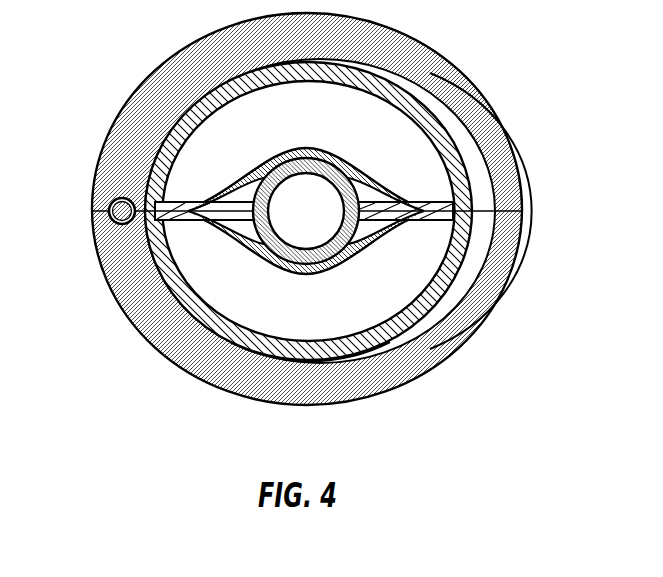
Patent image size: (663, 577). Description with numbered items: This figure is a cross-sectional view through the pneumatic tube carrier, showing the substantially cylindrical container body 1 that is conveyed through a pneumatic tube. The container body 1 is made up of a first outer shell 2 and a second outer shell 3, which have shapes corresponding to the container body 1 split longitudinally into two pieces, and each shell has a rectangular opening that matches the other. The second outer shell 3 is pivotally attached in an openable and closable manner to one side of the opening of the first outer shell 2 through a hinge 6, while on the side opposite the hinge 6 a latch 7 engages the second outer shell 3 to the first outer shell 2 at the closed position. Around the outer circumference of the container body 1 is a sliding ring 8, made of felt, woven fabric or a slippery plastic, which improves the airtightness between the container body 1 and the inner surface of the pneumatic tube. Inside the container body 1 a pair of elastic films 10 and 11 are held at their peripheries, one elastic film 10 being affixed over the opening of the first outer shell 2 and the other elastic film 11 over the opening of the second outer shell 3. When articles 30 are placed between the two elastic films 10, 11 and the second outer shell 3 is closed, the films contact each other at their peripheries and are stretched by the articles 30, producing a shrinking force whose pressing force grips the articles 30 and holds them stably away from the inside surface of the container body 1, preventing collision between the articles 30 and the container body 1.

The container body 1 is at (308, 221).
The first outer shell 2 is at (309, 362).
The second outer shell 3 is at (351, 63).
The hinge 6 is at (108, 226).
The latch 7 is at (497, 172).
The sliding ring 8 is at (113, 117).
The elastic film 10 is at (347, 261).
The elastic film 11 is at (340, 156).
The articles 30 is at (283, 264).